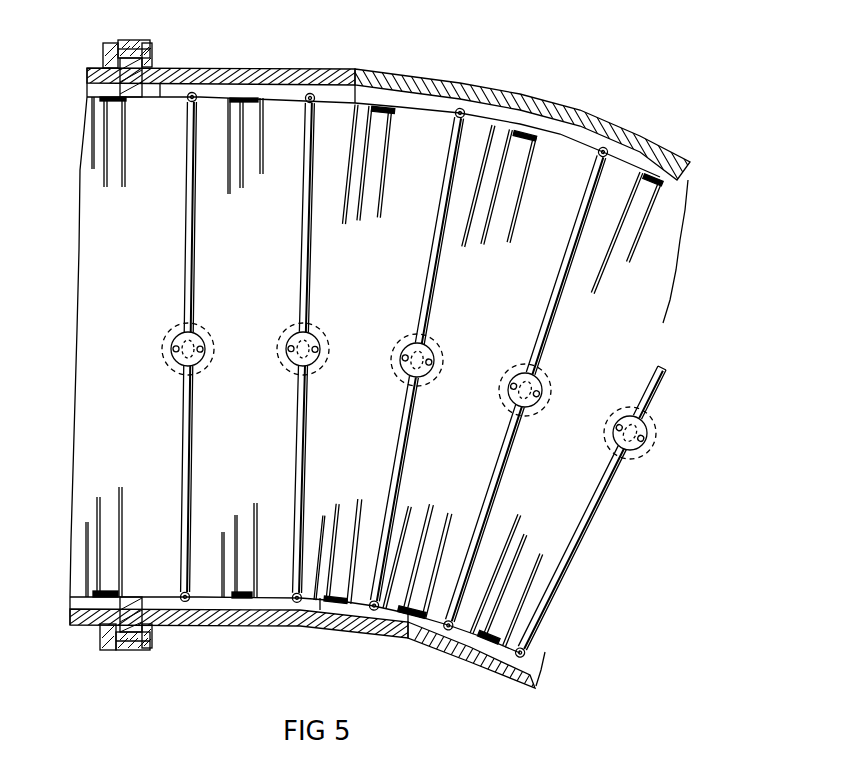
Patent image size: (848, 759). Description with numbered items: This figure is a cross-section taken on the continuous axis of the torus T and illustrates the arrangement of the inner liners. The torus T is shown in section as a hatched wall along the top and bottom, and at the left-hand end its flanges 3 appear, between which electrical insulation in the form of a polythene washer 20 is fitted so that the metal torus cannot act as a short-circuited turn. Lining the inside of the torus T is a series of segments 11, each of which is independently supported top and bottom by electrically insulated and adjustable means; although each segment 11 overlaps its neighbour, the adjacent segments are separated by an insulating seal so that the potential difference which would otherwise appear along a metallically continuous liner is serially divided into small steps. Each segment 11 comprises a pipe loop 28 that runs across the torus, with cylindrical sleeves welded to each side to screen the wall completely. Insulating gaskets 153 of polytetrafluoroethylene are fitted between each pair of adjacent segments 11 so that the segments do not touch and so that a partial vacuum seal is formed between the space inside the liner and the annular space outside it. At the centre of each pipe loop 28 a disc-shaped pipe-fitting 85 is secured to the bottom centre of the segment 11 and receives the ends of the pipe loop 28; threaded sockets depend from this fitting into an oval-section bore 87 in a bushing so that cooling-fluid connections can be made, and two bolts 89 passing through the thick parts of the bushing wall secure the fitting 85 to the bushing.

The torus T is at (432, 87).
The flanges 3 is at (152, 60).
The washer 20 is at (128, 88).
The pipe loop 28 is at (393, 462).
The disc-shaped pipe-fitting 85 is at (296, 356).
The oval-section bore 87 is at (318, 338).
The bolts 89 is at (174, 368).
The liner segments 11 is at (557, 254).
The insulating gaskets 153 is at (241, 604).